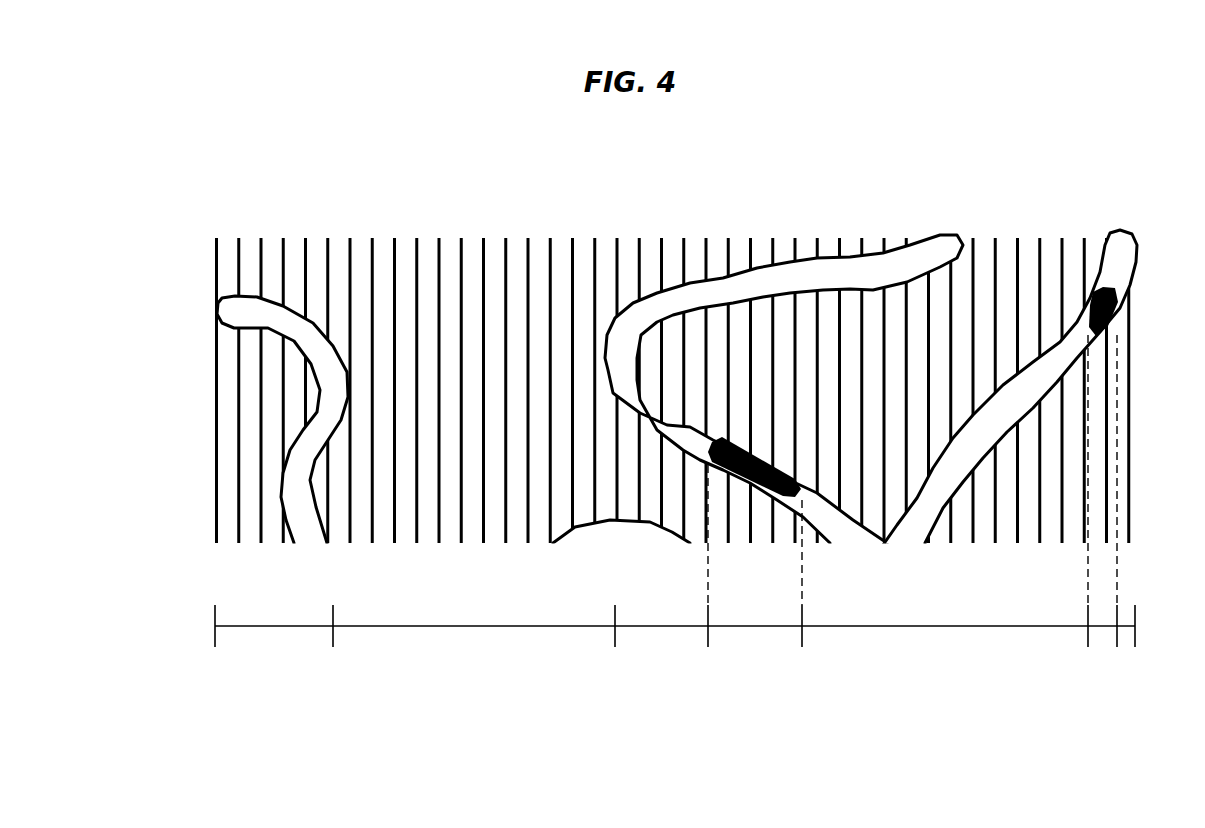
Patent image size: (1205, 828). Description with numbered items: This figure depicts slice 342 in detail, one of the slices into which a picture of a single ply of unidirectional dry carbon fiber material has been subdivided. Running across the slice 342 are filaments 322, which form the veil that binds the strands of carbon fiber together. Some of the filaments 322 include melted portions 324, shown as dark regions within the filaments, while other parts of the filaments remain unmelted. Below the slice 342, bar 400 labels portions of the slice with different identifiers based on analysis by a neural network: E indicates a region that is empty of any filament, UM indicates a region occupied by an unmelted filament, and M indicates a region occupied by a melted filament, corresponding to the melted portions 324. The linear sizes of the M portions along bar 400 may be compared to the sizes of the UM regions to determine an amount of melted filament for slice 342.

The filaments 322 is at (947, 247).
The melted portions 324 is at (743, 476).
The slice 342 is at (97, 238).
The bar 400 is at (231, 626).